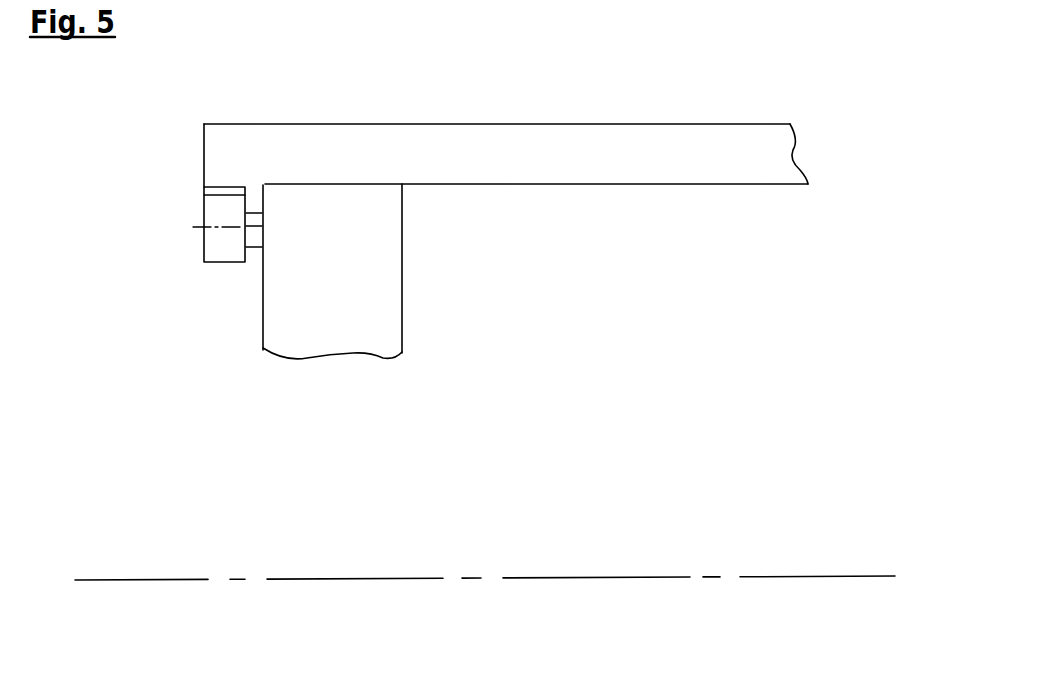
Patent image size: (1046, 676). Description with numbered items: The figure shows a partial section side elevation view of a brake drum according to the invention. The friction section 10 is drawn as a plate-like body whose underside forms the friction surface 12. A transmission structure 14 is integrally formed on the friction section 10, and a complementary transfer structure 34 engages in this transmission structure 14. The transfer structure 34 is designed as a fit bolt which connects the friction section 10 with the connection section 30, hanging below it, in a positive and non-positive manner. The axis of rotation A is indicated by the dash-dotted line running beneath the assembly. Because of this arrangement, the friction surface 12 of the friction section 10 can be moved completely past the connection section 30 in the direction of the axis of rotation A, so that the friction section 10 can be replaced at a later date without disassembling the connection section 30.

The friction section 10 is at (506, 279).
The friction surface 12 is at (558, 185).
The transmission structure 14 is at (255, 199).
The connection section 30 is at (224, 389).
The transfer structure 34 is at (225, 242).
The axis of rotation A is at (415, 572).